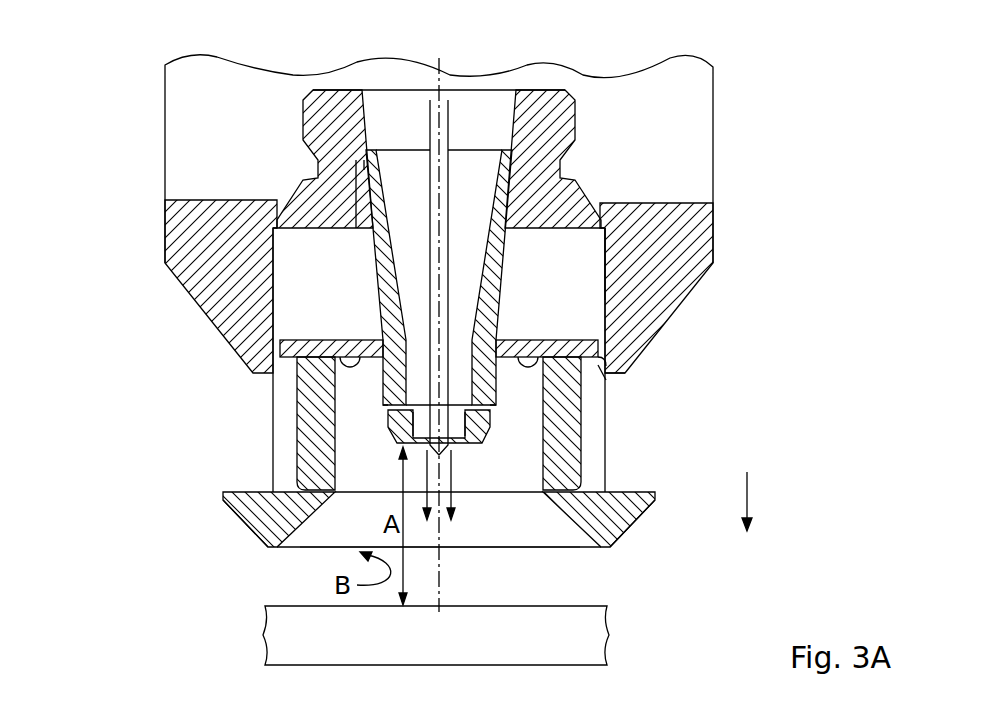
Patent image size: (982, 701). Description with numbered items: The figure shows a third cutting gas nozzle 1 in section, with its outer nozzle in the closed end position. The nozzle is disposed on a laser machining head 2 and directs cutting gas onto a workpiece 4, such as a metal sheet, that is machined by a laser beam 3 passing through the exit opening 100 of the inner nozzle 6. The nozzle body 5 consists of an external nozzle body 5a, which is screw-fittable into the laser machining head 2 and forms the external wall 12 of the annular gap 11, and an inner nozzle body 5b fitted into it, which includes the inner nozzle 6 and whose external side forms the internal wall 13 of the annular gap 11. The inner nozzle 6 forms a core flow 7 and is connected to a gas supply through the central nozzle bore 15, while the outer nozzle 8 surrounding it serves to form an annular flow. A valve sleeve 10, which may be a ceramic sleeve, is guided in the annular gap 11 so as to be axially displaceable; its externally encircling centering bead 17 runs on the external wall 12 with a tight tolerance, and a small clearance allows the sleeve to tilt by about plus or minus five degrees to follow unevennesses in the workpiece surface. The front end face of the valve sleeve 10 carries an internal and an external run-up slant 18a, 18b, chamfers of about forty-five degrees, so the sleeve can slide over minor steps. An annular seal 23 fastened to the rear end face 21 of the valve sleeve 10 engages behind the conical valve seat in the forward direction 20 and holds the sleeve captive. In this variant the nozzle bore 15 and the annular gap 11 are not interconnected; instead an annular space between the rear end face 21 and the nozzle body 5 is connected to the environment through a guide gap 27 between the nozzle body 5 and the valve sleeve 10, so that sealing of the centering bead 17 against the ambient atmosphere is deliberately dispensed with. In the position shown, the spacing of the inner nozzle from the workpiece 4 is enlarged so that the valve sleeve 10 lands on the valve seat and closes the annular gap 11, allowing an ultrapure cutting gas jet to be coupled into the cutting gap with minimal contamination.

The cutting gas nozzle 1 is at (140, 337).
The laser machining head 2 is at (670, 106).
The laser beam 3 is at (520, 558).
The workpiece 4 is at (584, 641).
The nozzle body 5 is at (608, 196).
The external nozzle body 5a is at (632, 316).
The inner nozzle body 5b is at (516, 250).
The inner nozzle 6 is at (388, 425).
The core flow 7 is at (455, 480).
The outer nozzle 8 is at (337, 386).
The valve sleeve 10 is at (317, 453).
The annular gap 11 is at (295, 292).
The external wall of the annular gap 12 is at (297, 236).
The internal wall of the annular gap 13 is at (516, 275).
The nozzle bore 15 is at (497, 142).
The centering bead 17 is at (606, 380).
The run-up slant 18a is at (307, 527).
The run-up slant 18b is at (243, 527).
The forward direction 20 is at (789, 501).
The rear end face of the valve sleeve 21 is at (313, 334).
The annular seal 23 is at (350, 362).
The guide gap 27 is at (606, 372).
The exit opening 100 is at (452, 432).